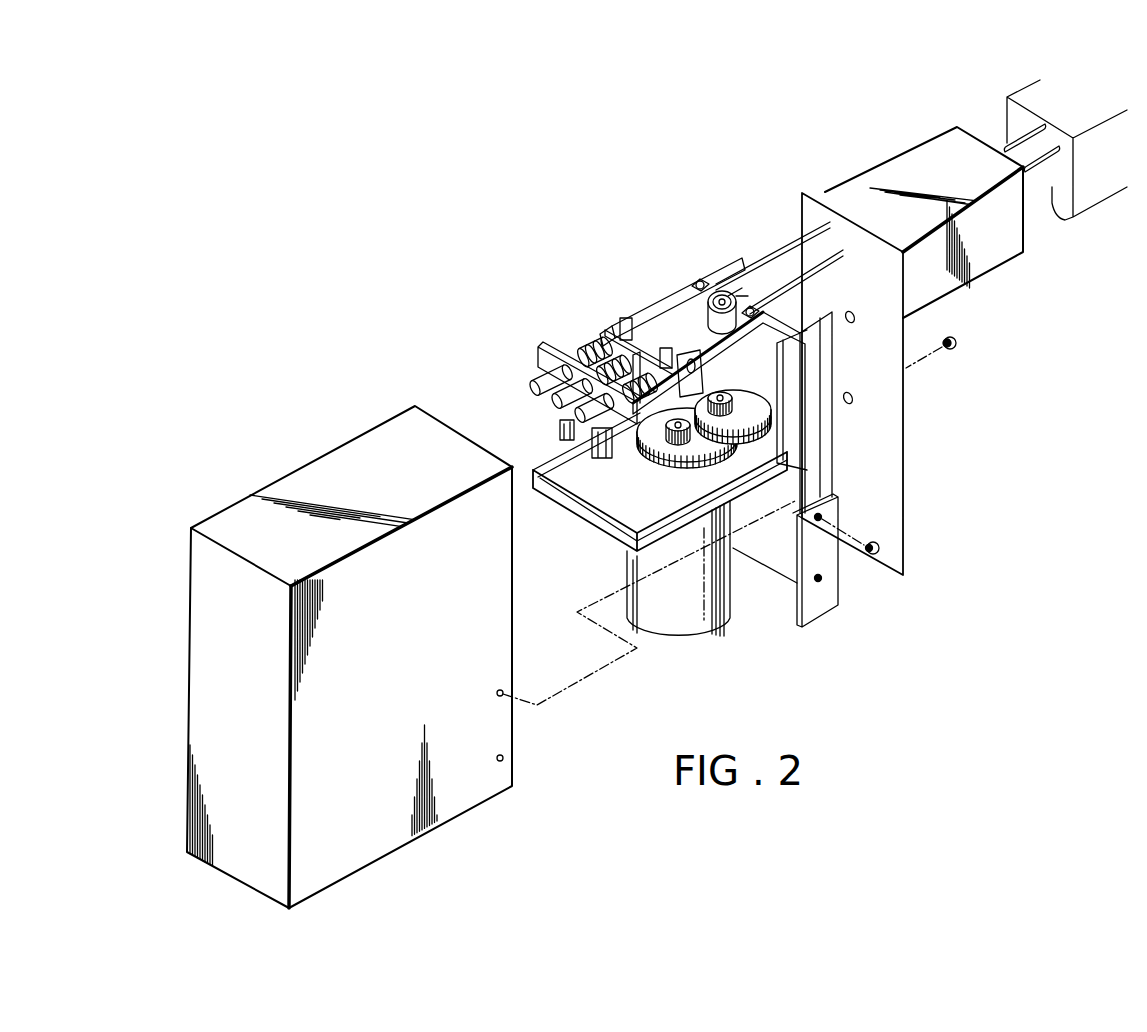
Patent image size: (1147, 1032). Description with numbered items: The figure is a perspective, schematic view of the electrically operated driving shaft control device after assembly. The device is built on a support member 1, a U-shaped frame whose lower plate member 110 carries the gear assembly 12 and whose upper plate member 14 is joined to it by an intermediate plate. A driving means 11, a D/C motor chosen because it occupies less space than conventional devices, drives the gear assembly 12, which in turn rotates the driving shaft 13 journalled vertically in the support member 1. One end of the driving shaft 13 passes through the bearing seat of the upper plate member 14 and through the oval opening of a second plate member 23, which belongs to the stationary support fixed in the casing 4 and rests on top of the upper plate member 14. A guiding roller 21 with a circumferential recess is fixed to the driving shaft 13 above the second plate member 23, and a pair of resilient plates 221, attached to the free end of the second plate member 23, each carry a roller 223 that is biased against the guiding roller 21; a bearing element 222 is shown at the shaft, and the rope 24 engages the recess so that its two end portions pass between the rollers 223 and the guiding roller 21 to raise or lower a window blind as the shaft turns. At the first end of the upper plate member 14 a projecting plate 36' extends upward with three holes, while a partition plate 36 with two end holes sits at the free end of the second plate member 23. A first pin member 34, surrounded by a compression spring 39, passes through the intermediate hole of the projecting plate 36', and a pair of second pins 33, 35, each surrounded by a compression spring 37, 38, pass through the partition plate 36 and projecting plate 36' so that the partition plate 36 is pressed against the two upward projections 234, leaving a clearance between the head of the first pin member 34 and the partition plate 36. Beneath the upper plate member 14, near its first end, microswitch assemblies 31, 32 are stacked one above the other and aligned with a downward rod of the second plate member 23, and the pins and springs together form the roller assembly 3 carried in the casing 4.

The support member 1 is at (655, 501).
The lower plate member 110 is at (613, 530).
The driving means 11 is at (730, 594).
The gear assembly 12 is at (788, 432).
The driving shaft 13 is at (744, 297).
The upper plate member 14 is at (812, 377).
The guiding roller 21 is at (740, 290).
The resilient plates 221 is at (655, 292).
The bearing 222 is at (722, 292).
The roller 223 is at (674, 300).
The second plate member 23 is at (835, 418).
The rope 24 is at (815, 202).
The upward projections 234 is at (643, 330).
The roller assembly 3 is at (548, 296).
The microswitch assembly 31 is at (622, 450).
The microswitch assembly 32 is at (598, 450).
The second pin 33 is at (536, 387).
The first pin member 34 is at (553, 403).
The second pin 35 is at (576, 418).
The partition plate 36 is at (628, 340).
The projecting plate 36' is at (566, 365).
The compression spring 37 is at (592, 352).
The compression spring 38 is at (590, 345).
The compression spring 39 is at (655, 420).
The casing 4 is at (397, 424).